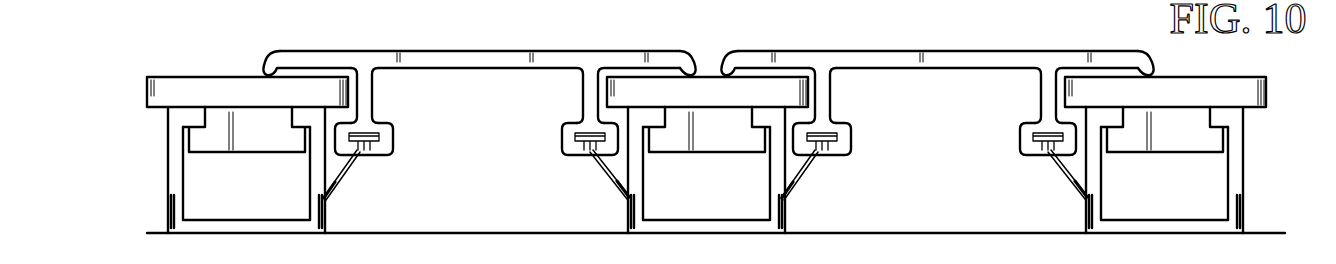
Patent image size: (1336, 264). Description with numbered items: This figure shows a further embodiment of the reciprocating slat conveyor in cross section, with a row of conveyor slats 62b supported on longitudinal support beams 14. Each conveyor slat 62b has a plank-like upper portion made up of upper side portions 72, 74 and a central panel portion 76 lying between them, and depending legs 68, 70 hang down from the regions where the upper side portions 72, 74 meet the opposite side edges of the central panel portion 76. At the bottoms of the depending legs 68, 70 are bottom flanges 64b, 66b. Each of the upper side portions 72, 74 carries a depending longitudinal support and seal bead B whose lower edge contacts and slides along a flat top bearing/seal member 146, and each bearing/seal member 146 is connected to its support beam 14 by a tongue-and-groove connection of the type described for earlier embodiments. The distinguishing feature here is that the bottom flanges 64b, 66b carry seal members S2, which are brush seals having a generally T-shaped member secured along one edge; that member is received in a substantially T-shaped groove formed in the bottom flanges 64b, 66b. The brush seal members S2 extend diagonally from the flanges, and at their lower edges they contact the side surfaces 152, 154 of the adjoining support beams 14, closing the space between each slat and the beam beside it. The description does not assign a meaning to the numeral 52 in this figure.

The longitudinal support beam 14 is at (270, 215).
The flat top bearing/seal member 146 is at (247, 142).
The side surface of support beam 152 is at (327, 218).
The side surface of support beam 154 is at (627, 208).
The conveyor slat 62b is at (427, 63).
The upper side portion 72 is at (318, 53).
The upper side portion 74 is at (658, 58).
The central panel portion 76 is at (558, 58).
The depending leg 68 is at (372, 99).
The depending leg 70 is at (586, 88).
The bottom flange 64b is at (393, 142).
The bottom flange 66b is at (562, 142).
The spring 52 is at (602, 170).
The brush seal member S2 is at (348, 170).
The support and seal bead B is at (263, 76).